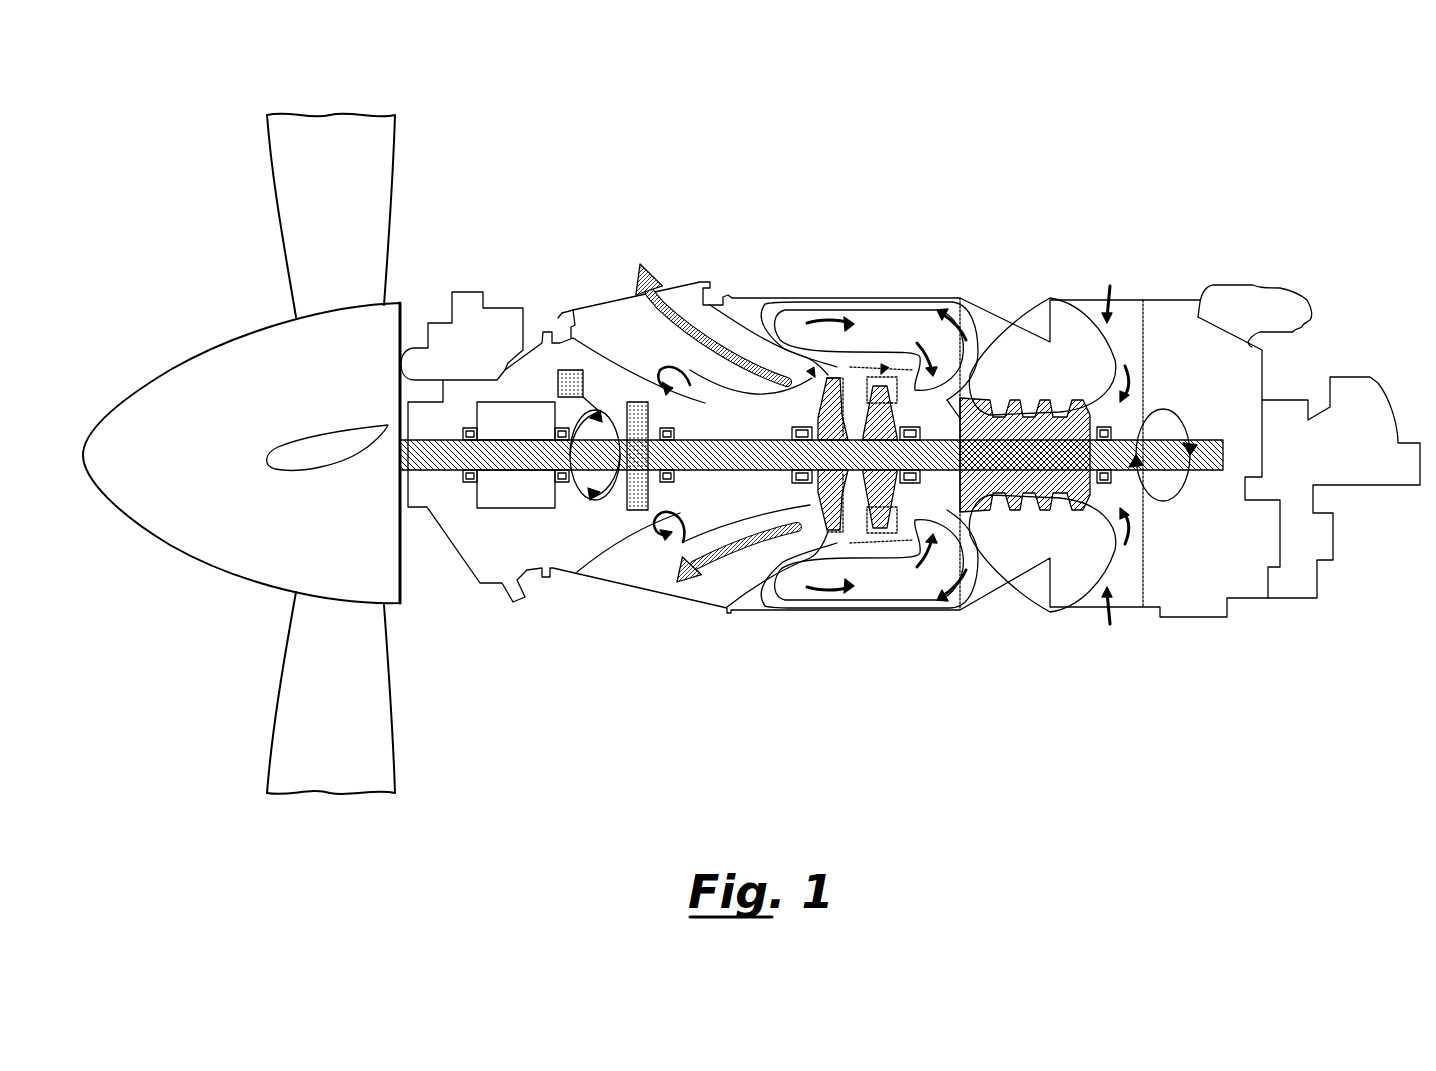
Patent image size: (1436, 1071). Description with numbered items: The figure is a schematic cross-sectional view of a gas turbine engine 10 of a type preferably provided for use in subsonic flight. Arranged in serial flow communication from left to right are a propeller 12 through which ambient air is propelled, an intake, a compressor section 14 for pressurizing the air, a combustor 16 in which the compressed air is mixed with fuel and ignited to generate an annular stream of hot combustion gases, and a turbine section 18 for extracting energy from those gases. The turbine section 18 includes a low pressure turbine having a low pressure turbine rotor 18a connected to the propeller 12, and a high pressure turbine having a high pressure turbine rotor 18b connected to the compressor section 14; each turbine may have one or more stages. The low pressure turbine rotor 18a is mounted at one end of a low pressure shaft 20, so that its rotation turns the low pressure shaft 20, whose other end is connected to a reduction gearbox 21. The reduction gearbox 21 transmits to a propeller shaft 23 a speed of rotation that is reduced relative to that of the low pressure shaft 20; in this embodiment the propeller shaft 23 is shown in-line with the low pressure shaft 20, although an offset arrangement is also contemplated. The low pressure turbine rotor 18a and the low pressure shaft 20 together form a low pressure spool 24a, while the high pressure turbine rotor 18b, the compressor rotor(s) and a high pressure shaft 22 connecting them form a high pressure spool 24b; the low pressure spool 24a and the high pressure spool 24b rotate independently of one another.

The gas turbine engine 10 is at (1083, 170).
The propeller 12 is at (197, 505).
The compressor section 14 is at (1045, 520).
The combustor 16 is at (862, 315).
The turbine section 18 is at (863, 457).
The low pressure turbine rotor 18a is at (810, 368).
The high pressure turbine rotor 18b is at (888, 362).
The low pressure shaft 20 is at (812, 512).
The reduction gearbox 21 is at (512, 492).
The high pressure shaft 22 is at (928, 478).
The propeller shaft 23 is at (440, 472).
The low pressure spool 24a is at (705, 410).
The high pressure spool 24b is at (945, 400).